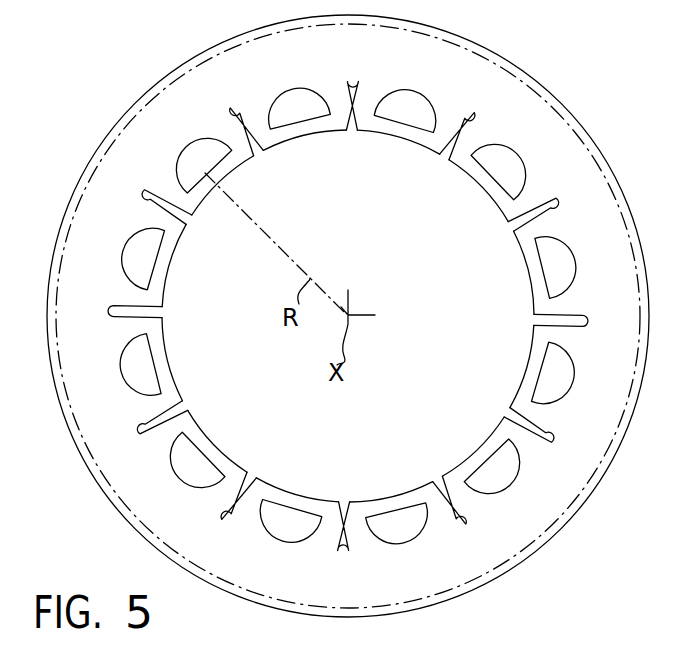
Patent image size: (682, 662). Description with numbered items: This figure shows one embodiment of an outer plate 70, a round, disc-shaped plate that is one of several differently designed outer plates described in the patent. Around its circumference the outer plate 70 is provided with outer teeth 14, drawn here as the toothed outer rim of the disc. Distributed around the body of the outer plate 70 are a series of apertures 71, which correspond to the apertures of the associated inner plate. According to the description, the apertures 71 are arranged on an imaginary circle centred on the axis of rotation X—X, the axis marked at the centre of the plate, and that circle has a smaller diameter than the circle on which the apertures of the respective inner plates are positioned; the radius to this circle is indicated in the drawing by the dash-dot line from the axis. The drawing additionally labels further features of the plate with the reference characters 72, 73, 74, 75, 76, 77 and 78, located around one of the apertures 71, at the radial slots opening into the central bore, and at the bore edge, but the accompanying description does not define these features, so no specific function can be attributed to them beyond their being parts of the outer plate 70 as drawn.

The outer teeth 14 is at (487, 48).
The outer plate 70 is at (608, 120).
The apertures 71 is at (513, 188).
The arcuate pocket wall 72 is at (185, 158).
The pocket 73 is at (185, 168).
The pocket floor 74 is at (211, 168).
The flat pocket wall 75 is at (207, 176).
The radial slot 76 is at (536, 351).
The central bore 77 is at (387, 496).
The slot outer end 78 is at (588, 325).